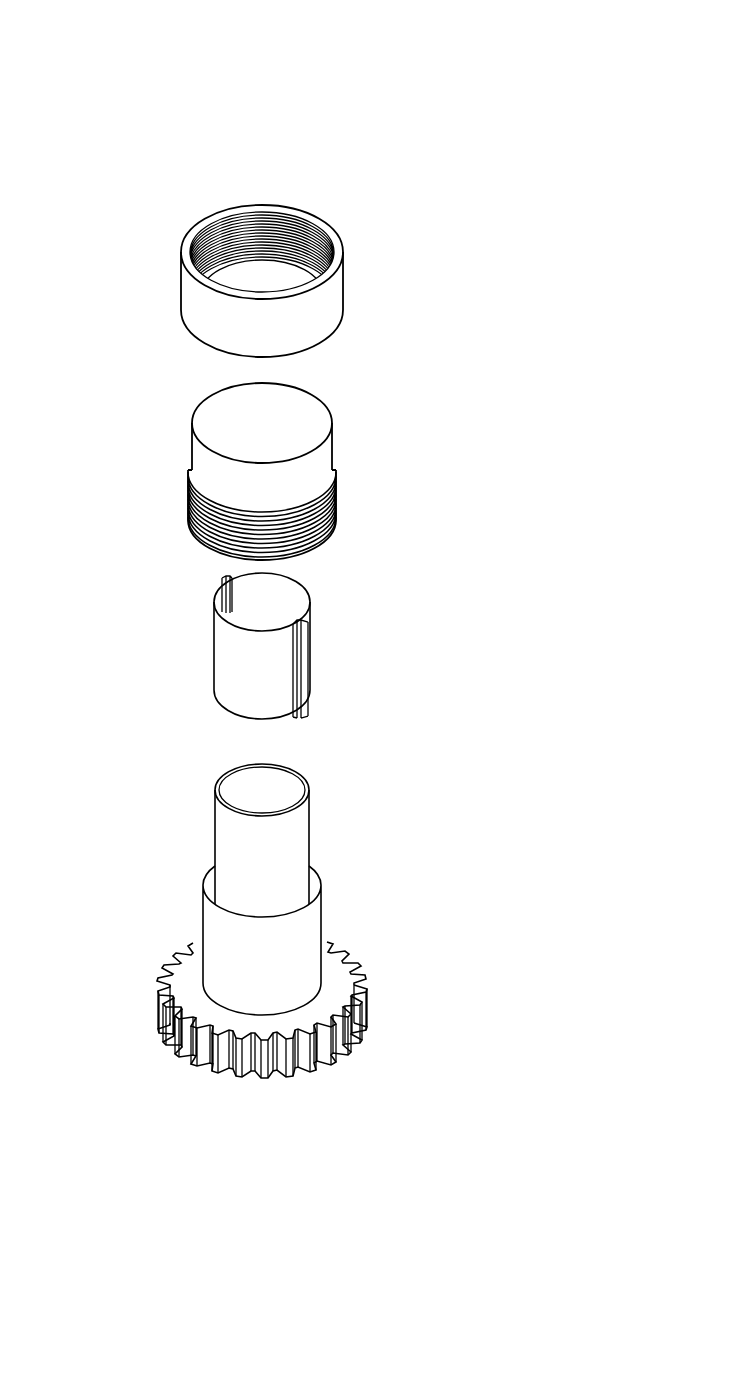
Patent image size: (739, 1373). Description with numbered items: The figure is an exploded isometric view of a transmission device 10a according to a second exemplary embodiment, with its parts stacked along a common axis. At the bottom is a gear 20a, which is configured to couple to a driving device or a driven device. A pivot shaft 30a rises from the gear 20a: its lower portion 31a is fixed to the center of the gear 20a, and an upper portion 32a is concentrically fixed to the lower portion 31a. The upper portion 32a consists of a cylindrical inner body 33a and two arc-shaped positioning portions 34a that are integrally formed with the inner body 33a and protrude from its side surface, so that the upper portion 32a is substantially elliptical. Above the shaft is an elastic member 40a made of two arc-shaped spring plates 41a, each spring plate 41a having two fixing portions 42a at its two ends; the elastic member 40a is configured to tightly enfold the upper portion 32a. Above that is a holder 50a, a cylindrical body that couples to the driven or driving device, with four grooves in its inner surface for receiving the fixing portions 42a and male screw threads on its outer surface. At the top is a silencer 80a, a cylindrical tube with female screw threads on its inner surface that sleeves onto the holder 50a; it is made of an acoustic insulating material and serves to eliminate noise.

The transmission device 10a is at (190, 48).
The silencer 80a is at (330, 297).
The holder 50a is at (206, 458).
The elastic member 40a is at (282, 639).
The spring plate 41a is at (235, 658).
The fixing portion 42a is at (313, 653).
The pivot shaft 30a is at (237, 862).
The lower portion 31a is at (257, 948).
The upper portion 32a is at (321, 807).
The inner body 33a is at (268, 782).
The positioning portion 34a is at (305, 797).
The gear 20a is at (353, 1032).